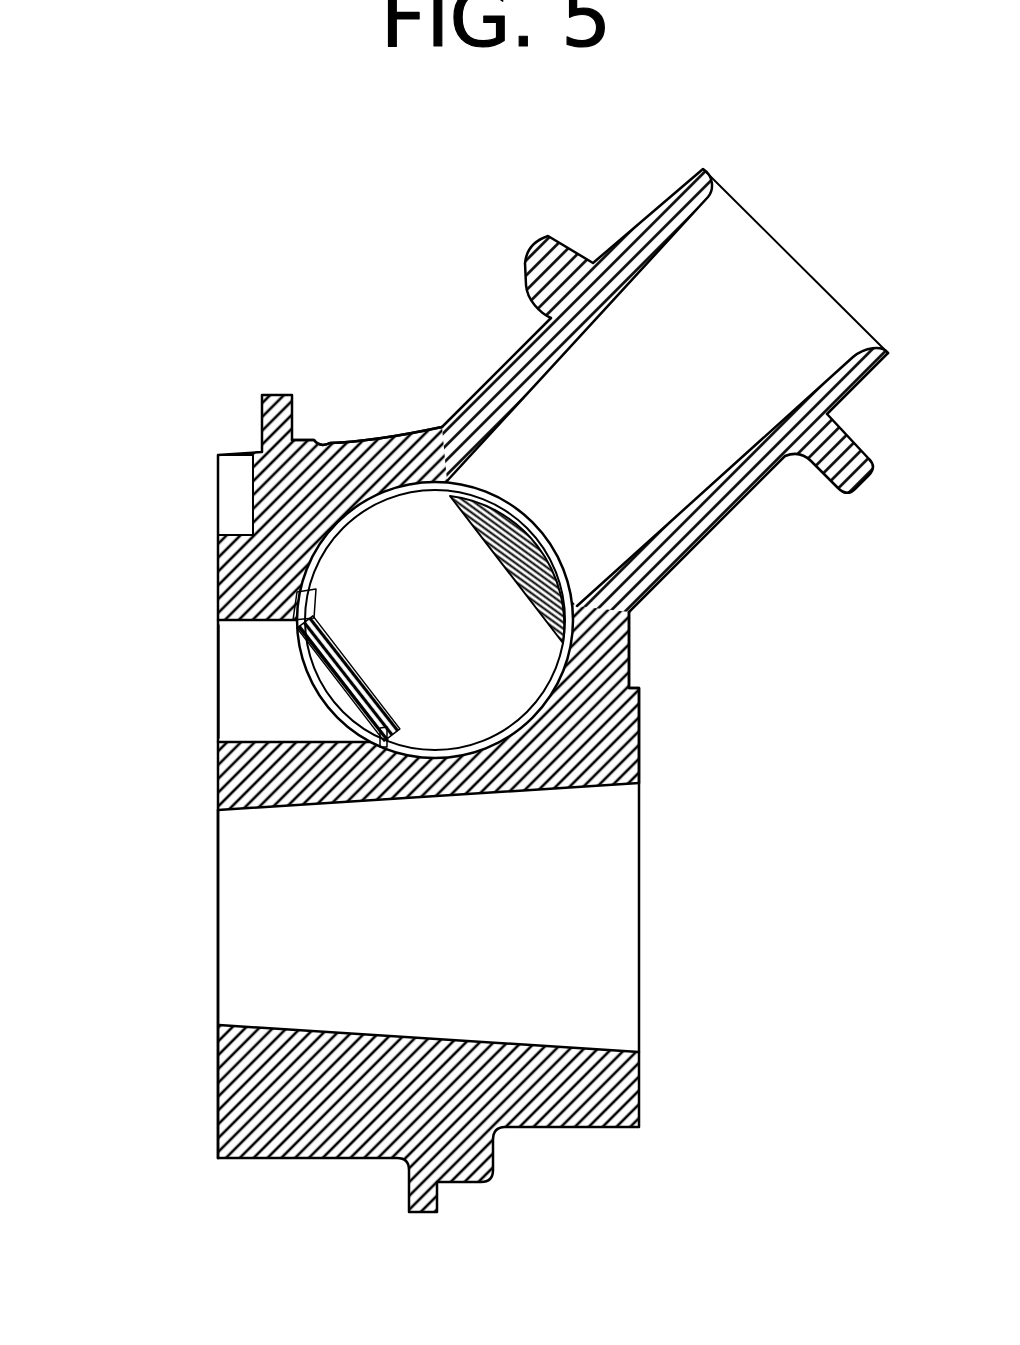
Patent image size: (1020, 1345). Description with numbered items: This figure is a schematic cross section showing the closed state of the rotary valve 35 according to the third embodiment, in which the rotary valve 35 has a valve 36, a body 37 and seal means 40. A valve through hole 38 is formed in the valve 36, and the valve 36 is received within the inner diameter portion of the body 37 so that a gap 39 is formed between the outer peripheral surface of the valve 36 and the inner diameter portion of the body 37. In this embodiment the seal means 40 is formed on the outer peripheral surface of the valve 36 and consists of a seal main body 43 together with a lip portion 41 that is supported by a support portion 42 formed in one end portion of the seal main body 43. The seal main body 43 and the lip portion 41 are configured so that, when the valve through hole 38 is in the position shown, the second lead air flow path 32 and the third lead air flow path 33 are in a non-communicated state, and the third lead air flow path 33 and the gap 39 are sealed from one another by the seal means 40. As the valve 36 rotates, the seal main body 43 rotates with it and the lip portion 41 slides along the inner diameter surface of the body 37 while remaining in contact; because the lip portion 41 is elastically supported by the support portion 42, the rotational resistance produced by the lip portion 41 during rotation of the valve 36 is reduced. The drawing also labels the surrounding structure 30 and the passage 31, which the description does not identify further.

The valve body 30 is at (318, 460).
The flow passage 31 is at (318, 977).
The second lead air flow path 32 is at (245, 733).
The third lead air flow path 33 is at (724, 292).
The rotary valve 35 is at (384, 410).
The valve 36 is at (533, 560).
The body 37 is at (603, 713).
The valve through hole 38 is at (463, 692).
The gap 39 is at (490, 745).
The seal means 40 is at (205, 786).
The lip portion 41 is at (298, 590).
The support portion 42 is at (373, 732).
The seal main body 43 is at (317, 650).